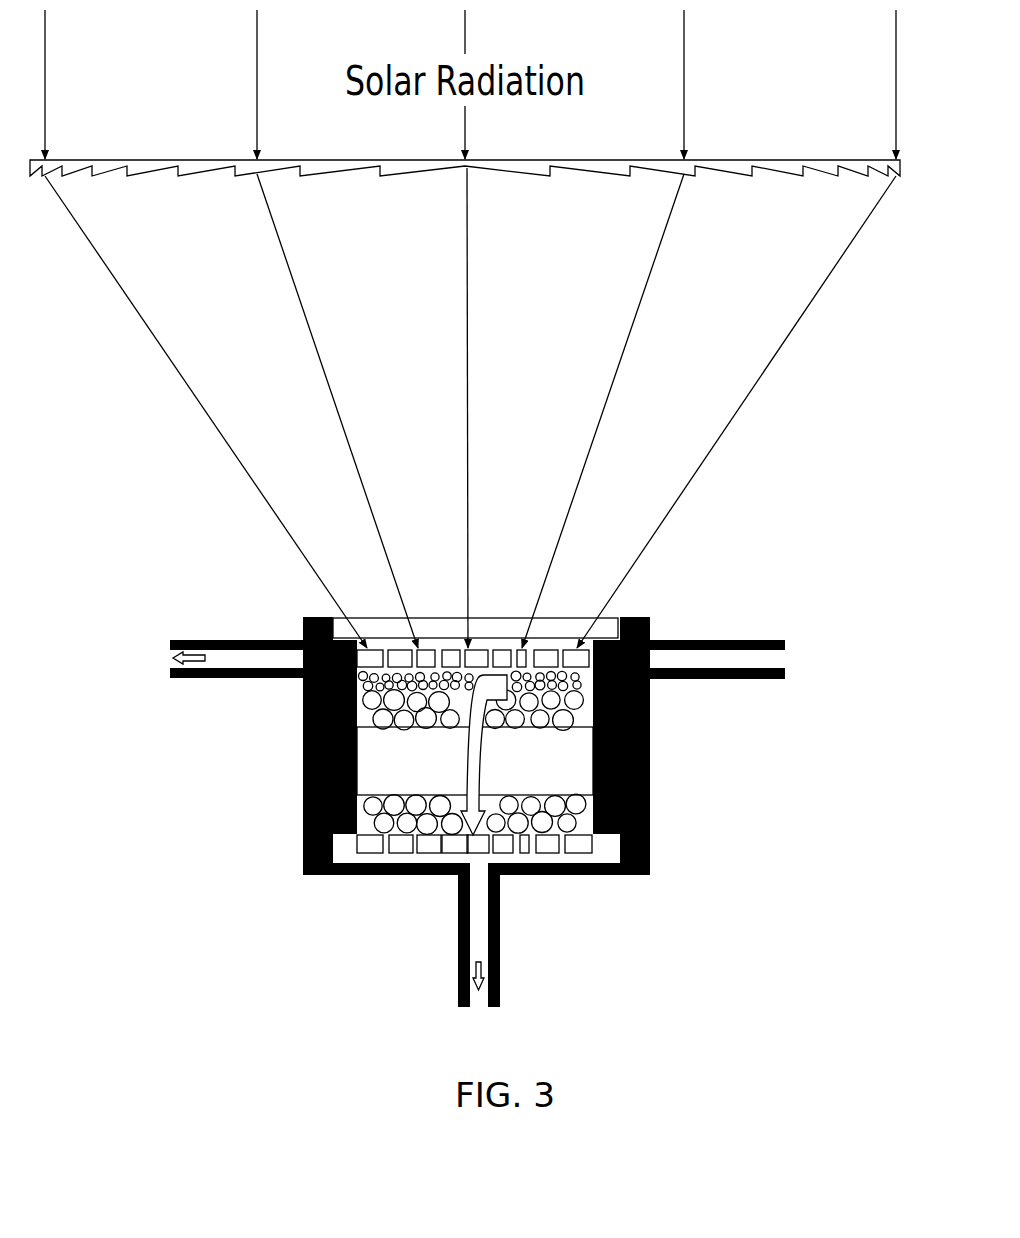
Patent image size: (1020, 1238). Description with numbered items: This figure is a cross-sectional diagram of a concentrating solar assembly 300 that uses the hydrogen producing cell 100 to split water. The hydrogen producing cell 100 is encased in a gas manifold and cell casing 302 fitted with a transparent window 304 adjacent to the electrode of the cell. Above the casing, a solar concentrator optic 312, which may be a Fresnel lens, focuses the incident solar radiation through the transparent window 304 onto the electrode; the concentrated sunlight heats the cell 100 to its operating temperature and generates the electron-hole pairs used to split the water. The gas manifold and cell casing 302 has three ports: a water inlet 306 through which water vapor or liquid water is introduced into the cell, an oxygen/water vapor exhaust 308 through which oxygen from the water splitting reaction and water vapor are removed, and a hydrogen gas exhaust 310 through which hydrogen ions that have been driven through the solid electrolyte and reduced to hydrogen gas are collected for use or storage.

The concentrating solar assembly 300 is at (126, 144).
The solar concentrator optic 312 is at (765, 160).
The transparent window 304 is at (507, 618).
The gas manifold and cell casing 302 is at (303, 733).
The oxygen/water vapor exhaust 308 is at (168, 656).
The water inlet 306 is at (778, 660).
The hydrogen producing cell 100 is at (390, 744).
The hydrogen gas exhaust 310 is at (478, 1010).